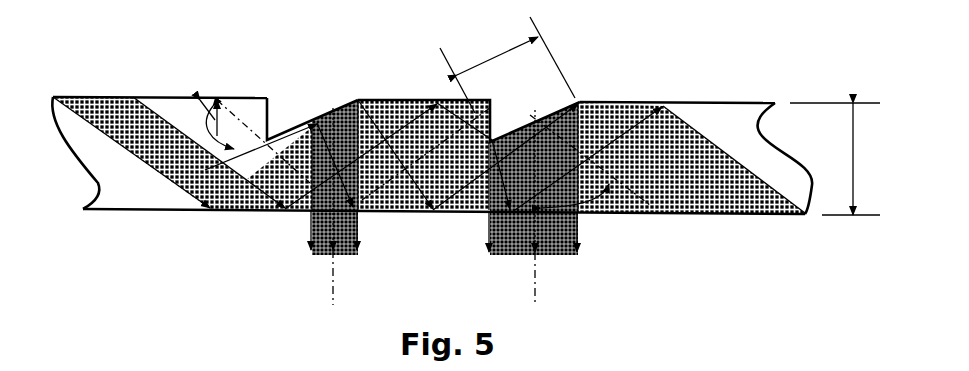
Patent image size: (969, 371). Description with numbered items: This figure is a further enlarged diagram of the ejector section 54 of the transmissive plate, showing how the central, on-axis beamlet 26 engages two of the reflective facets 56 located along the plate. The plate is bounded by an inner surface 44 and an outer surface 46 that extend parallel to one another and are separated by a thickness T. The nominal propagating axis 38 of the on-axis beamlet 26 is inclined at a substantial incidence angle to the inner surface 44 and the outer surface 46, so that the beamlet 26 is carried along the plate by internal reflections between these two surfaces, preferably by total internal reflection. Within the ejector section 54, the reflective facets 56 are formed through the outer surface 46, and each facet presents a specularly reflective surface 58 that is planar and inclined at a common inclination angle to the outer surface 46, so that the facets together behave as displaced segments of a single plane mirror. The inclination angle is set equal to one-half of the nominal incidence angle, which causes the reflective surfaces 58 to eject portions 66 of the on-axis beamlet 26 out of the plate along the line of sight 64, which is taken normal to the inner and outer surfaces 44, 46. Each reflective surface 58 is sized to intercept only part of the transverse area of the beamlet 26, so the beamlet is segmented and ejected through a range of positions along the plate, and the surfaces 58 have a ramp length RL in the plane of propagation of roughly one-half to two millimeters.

The on-axis beamlet 26 is at (736, 161).
The nominal propagating axis 38 is at (390, 212).
The inner surface 44 is at (153, 209).
The outer surface 46 is at (709, 103).
The ejector section 54 is at (170, 94).
The reflective facets 56 is at (320, 118).
The specularly reflective surfaces 58 is at (292, 130).
The line of sight 64 is at (333, 282).
The ejected portions 66 is at (311, 240).
The ramp length RL is at (490, 58).
The thickness T is at (853, 140).